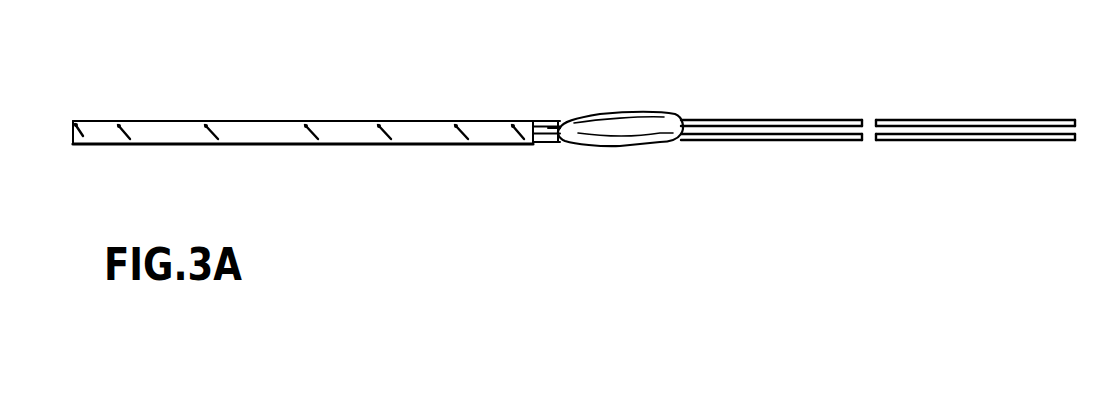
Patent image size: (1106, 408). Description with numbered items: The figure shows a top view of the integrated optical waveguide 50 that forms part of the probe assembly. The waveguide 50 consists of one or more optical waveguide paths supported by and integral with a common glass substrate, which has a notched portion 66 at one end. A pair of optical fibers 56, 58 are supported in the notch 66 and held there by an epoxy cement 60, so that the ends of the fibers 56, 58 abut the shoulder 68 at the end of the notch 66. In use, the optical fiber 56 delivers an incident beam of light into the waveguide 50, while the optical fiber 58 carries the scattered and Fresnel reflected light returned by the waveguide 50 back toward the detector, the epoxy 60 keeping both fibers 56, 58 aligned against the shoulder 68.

The integrated optical waveguide 50 is at (258, 120).
The shoulder 68 is at (530, 120).
The notched portion 66 is at (553, 120).
The epoxy cement 60 is at (667, 114).
The optical fiber 56 is at (1018, 118).
The optical fiber 58 is at (1024, 142).